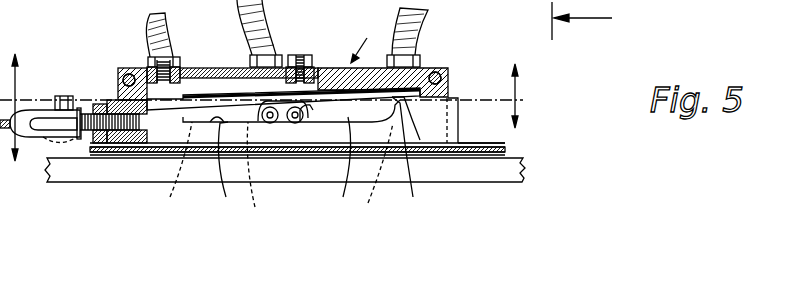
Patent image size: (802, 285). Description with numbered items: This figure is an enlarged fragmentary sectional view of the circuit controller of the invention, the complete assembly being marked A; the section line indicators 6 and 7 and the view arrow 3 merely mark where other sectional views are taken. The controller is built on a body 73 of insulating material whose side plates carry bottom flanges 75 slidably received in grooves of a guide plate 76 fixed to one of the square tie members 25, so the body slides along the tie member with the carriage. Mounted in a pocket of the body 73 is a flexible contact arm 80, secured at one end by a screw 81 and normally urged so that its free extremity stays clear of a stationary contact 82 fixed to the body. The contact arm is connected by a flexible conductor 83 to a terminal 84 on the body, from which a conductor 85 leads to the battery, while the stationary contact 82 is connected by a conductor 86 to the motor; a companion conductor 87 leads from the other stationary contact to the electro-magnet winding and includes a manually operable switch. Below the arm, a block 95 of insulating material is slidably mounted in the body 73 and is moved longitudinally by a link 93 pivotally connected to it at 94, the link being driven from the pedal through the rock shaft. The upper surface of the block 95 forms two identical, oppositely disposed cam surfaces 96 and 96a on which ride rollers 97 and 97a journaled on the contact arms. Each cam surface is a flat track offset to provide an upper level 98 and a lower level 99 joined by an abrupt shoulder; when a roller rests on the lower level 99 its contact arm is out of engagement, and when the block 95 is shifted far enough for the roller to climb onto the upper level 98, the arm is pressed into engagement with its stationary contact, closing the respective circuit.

The tie member 25 is at (508, 170).
The body 73 is at (328, 73).
The flange 75 is at (203, 145).
The guide plate 76 is at (477, 145).
The flexible contact arm 80 is at (162, 103).
The screw 81 is at (412, 153).
The stationary contact 82 is at (150, 70).
The flexible conductor 83 is at (222, 96).
The terminal 84 is at (316, 63).
The conductor 85 is at (243, 13).
The conductor 86 is at (150, 32).
The conductor 87 is at (427, 22).
The link 93 is at (46, 138).
The pivot connection 94 is at (63, 96).
The block 95 is at (143, 106).
The cam surface 96 is at (230, 166).
The cam surface 96a is at (383, 173).
The roller 97 is at (305, 123).
The roller 97a is at (259, 174).
The upper level 98 is at (259, 167).
The lower level 99 is at (262, 123).
The contact assembly A is at (362, 40).
The section line 3 is at (592, 21).
The section line 6 is at (265, 100).
The section line 7 is at (265, 142).